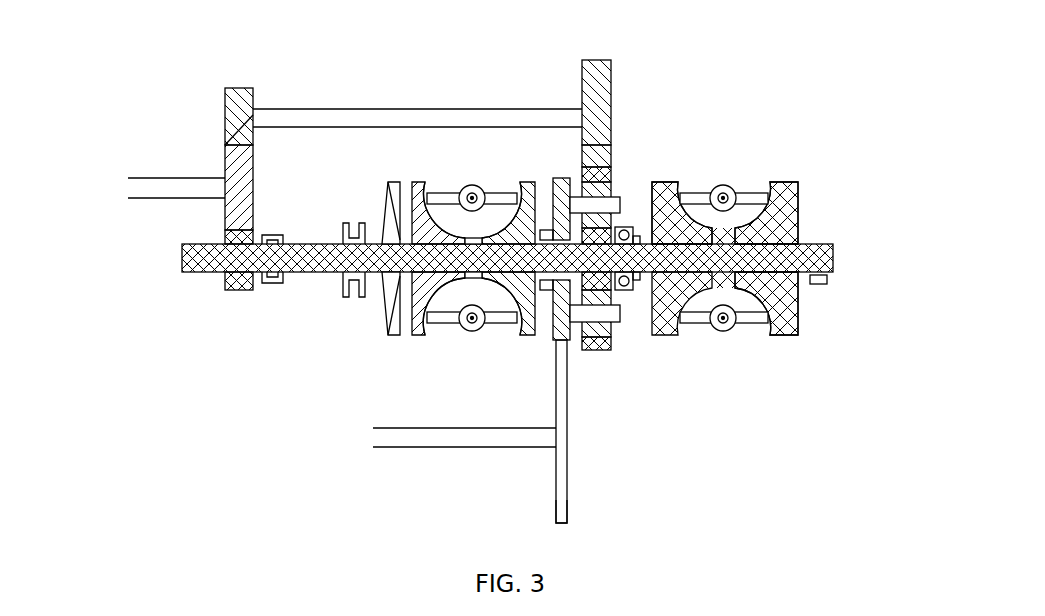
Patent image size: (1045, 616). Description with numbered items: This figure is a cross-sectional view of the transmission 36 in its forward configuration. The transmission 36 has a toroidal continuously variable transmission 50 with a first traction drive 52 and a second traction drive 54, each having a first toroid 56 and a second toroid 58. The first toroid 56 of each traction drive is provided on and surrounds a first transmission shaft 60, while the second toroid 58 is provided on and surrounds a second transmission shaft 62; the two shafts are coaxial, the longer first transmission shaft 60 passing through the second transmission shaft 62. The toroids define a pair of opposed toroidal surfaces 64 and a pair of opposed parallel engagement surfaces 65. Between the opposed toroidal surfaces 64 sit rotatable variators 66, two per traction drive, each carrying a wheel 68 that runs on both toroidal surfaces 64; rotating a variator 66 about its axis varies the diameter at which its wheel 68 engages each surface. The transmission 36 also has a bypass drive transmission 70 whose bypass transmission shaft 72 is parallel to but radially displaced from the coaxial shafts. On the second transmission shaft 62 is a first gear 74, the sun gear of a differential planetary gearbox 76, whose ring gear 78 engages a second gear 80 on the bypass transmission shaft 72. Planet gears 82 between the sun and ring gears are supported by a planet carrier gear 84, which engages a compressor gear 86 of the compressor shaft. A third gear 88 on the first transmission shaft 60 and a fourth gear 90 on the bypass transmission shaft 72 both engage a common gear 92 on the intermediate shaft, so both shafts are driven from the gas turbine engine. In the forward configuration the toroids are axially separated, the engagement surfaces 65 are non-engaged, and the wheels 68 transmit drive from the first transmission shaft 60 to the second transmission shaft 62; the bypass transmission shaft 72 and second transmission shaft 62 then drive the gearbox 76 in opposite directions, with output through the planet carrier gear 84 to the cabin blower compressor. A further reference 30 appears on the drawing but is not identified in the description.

The continuously variable transmission 30 is at (735, 96).
The transmission 36 is at (360, 75).
The toroidal continuously variable transmission 50 is at (300, 352).
The first traction drive 52 is at (446, 368).
The second traction drive 54 is at (790, 353).
The first toroid 56 is at (388, 335).
The second toroid 58 is at (545, 228).
The first transmission shaft 60 is at (318, 262).
The second transmission shaft 62 is at (672, 182).
The opposed toroidal surfaces 64 is at (458, 184).
The opposed parallel engagement surfaces 65 is at (466, 185).
The variator 66 is at (496, 192).
The wheel 68 is at (513, 190).
The bypass drive transmission 70 is at (279, 88).
The bypass transmission shaft 72 is at (330, 110).
The first gear 74 is at (615, 200).
The differential planetary gearbox 76 is at (586, 364).
The ring gear 78 is at (606, 352).
The second gear 80 is at (600, 92).
The planet gears 82 is at (620, 320).
The planet carrier gear 84 is at (568, 350).
The compressor gear 86 is at (567, 505).
The third gear 88 is at (235, 285).
The fourth gear 90 is at (240, 108).
The common gear 92 is at (240, 210).